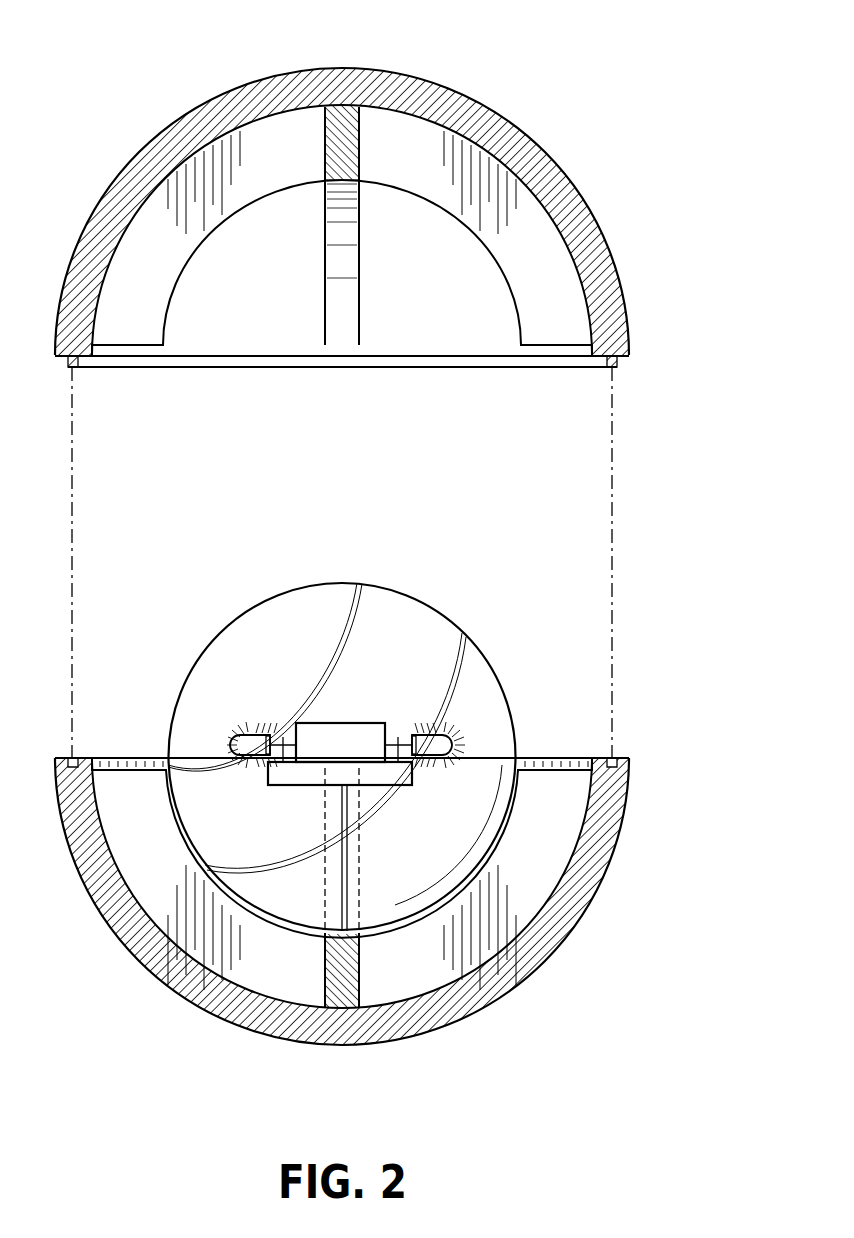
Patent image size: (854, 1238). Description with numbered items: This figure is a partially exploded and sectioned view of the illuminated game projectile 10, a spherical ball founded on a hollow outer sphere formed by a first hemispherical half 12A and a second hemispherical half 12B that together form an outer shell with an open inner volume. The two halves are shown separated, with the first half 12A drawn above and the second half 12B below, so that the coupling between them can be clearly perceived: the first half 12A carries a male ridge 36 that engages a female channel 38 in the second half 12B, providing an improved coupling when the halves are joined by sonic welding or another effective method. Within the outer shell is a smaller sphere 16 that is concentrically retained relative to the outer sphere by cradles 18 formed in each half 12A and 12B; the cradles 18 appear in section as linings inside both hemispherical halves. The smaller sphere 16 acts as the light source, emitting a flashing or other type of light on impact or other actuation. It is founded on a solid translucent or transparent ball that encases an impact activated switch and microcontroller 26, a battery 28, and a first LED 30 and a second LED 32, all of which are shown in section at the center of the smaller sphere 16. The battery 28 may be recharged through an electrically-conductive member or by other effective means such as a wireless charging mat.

The illuminated game projectile 10 is at (590, 98).
The first hemispherical half 12A is at (575, 184).
The second hemispherical half 12B is at (573, 928).
The smaller sphere 16 is at (469, 603).
The cradles 18 is at (260, 134).
The impact activated switch and microcontroller 26 is at (337, 723).
The battery 28 is at (370, 787).
The first LED 30 is at (215, 744).
The second LED 32 is at (472, 745).
The male ridge 36 is at (613, 357).
The female channel 38 is at (613, 735).